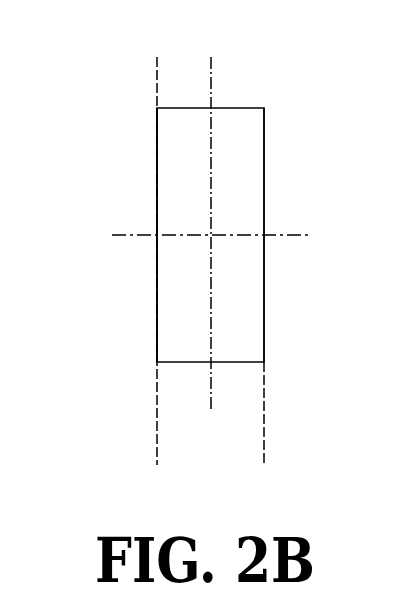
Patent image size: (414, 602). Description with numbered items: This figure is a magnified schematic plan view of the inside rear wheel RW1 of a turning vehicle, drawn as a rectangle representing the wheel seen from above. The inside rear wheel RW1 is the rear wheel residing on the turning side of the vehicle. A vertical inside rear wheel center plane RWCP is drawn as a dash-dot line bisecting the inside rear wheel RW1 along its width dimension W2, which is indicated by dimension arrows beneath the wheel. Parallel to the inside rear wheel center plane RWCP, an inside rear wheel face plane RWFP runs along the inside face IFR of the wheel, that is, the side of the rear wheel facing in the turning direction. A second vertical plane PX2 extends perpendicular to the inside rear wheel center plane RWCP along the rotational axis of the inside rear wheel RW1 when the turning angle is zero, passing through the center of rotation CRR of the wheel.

The second vertical plane PX2 is at (288, 235).
The inside rear wheel face plane RWFP is at (155, 87).
The inside rear wheel center plane RWCP is at (213, 87).
The center of rotation CRR is at (278, 237).
The inside face IFR is at (156, 259).
The inside rear wheel RW1 is at (272, 322).
The width dimension W2 is at (308, 456).